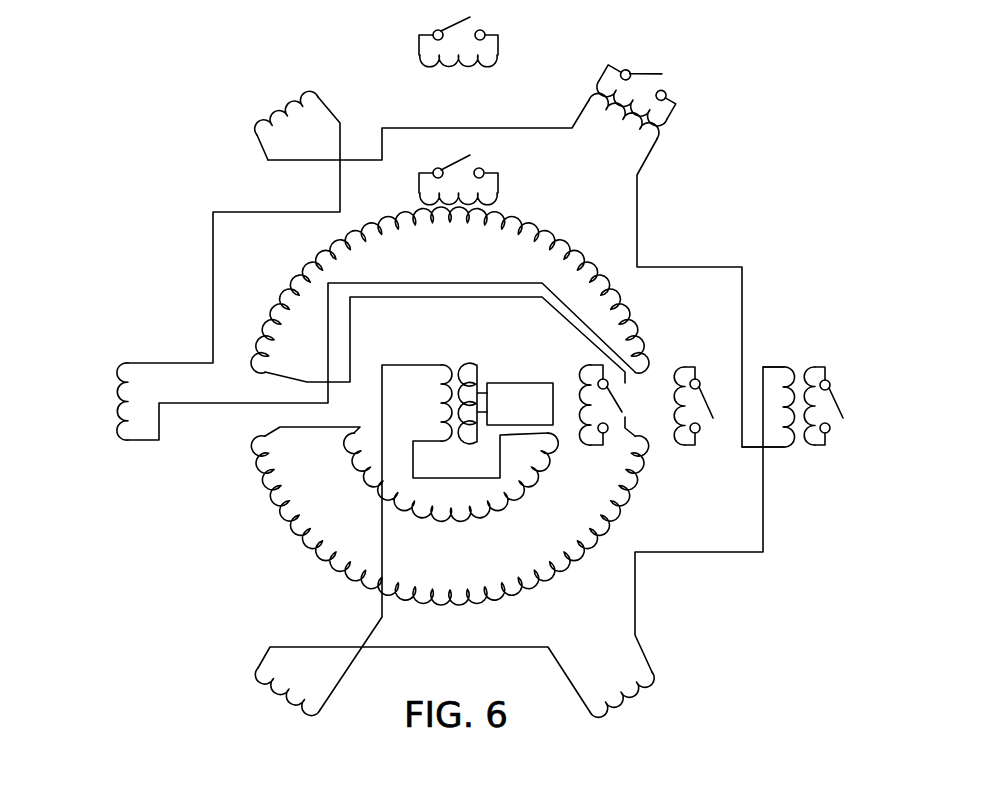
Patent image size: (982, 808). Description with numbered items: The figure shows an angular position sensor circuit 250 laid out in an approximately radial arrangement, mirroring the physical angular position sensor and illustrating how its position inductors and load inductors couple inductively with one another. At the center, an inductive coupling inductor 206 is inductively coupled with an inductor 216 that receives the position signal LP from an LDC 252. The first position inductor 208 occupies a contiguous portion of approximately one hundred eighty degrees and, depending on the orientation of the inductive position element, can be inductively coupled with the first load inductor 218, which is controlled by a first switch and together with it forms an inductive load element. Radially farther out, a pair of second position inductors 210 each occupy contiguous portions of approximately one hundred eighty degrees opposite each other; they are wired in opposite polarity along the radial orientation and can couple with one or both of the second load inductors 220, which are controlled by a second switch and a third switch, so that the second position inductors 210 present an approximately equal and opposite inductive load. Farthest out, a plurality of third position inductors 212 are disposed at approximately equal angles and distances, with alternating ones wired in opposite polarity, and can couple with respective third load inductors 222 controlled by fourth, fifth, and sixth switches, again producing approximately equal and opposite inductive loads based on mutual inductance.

The angular position sensor circuit 250 is at (177, 57).
The third position inductors 212 is at (287, 115).
The third load inductors 222 is at (458, 60).
The second load inductors 220 is at (498, 193).
The second position inductors 210 is at (292, 285).
The first position inductor 208 is at (455, 527).
The inductive coupling inductor 206 is at (442, 387).
The inductor 216 is at (457, 365).
The LDC 252 is at (518, 383).
The first load inductor 218 is at (580, 447).